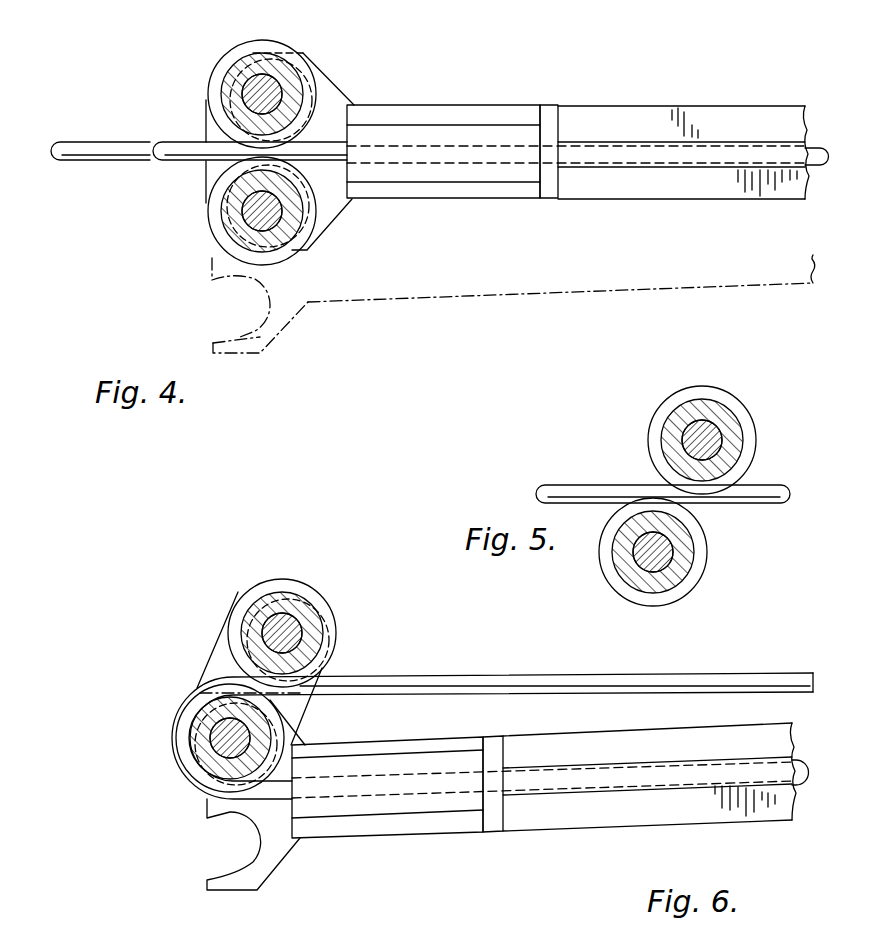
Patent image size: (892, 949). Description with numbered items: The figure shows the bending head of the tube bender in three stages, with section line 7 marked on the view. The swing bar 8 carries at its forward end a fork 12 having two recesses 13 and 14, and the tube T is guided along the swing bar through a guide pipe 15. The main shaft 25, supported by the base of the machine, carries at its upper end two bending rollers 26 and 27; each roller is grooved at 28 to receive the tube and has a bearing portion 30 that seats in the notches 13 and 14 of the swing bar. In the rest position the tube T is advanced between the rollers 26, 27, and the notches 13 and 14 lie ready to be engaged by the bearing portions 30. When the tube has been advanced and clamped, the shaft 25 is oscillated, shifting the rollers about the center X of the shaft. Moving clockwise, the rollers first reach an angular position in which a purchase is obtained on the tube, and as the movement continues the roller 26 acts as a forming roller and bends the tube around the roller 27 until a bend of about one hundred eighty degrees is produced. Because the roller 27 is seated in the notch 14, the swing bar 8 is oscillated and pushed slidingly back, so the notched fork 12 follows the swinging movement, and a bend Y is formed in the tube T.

In FIG. 6, the section line 7- 7 is at (690, 712).
In FIG. 4, the swing bar 8 is at (686, 110).
In FIG. 6, the swing bar 8 is at (572, 828).
In FIG. 4, the fork 12 is at (334, 83).
In FIG. 6, the fork 12 is at (542, 787).
In FIG. 4, the recess 13 is at (263, 342).
In FIG. 6, the recess 13 is at (262, 862).
In FIG. 4, the recess 14 is at (308, 78).
In FIG. 6, the recess 14 is at (259, 668).
In FIG. 4, the guide pipe 15 is at (633, 140).
In FIG. 6, the guide pipe 15 is at (540, 800).
In FIG. 4, the main shaft 25 is at (296, 165).
In FIG. 4, the bending roller 26 is at (211, 239).
In FIG. 5, the bending roller 26 is at (698, 579).
In FIG. 6, the bending roller 26 is at (266, 587).
In FIG. 4, the bending roller 27 is at (234, 54).
In FIG. 5, the bending roller 27 is at (716, 393).
In FIG. 6, the bending roller 27 is at (198, 766).
In FIG. 4, the groove 28 is at (206, 208).
In FIG. 4, the bearing portion 30 is at (268, 43).
In FIG. 4, the tube T is at (812, 150).
In FIG. 5, the tube T is at (570, 487).
In FIG. 6, the tube T is at (545, 680).
In FIG. 4, the center of shaft X is at (255, 150).
In FIG. 6, the bend Y is at (172, 740).